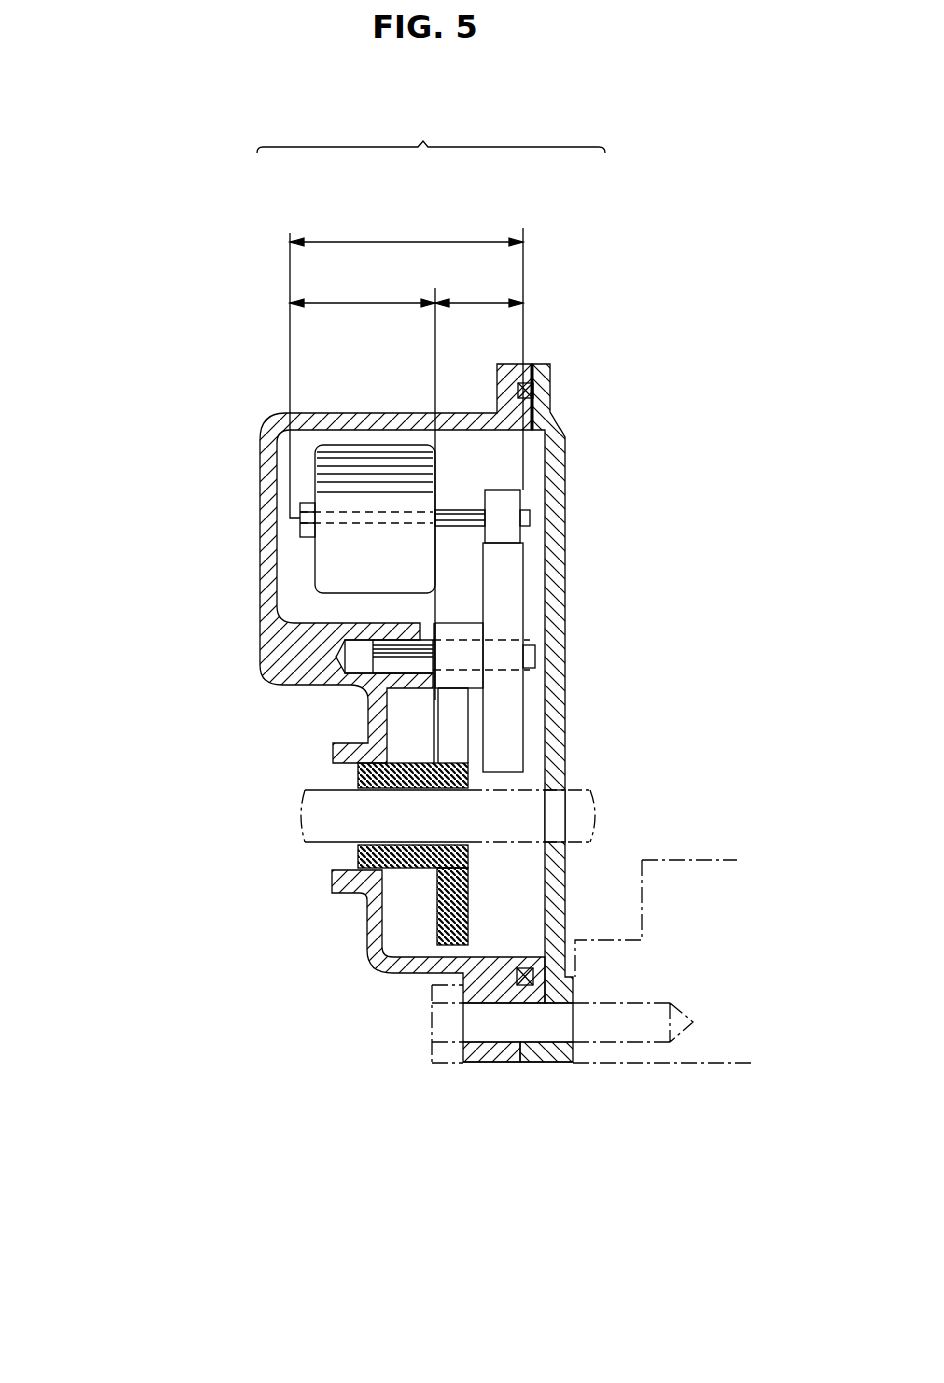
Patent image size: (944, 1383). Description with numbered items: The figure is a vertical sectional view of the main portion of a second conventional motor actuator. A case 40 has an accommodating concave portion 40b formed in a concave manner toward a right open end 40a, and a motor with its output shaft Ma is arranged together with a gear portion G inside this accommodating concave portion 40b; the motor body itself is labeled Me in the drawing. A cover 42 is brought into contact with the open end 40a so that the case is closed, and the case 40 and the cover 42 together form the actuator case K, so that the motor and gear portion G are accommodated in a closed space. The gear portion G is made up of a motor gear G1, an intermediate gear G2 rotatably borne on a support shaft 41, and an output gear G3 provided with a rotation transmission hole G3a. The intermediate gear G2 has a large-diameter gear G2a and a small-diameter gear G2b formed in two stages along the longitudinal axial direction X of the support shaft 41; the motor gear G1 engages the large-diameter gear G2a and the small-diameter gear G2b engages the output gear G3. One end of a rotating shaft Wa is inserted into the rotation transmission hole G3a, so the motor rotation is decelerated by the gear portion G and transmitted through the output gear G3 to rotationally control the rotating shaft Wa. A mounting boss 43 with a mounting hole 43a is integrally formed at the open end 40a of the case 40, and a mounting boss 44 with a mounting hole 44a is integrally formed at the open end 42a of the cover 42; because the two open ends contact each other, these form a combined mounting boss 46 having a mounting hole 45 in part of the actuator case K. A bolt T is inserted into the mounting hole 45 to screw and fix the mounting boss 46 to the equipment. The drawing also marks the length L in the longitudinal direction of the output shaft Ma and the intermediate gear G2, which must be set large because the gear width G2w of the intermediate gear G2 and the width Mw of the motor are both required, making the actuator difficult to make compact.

The actuator case K is at (431, 127).
The case 40 is at (272, 410).
The right open end 40a is at (515, 394).
The accommodating concave portion 40b is at (283, 575).
The cover 42 is at (565, 433).
The open end of the cover 42a is at (552, 378).
The length L is at (406, 363).
The width of the motor Mw is at (362, 486).
The gear width of the intermediate gear G2w is at (479, 289).
The electric motor Me is at (430, 546).
The output shaft Ma is at (464, 512).
The motor gear G1 is at (501, 490).
The gear portion G is at (597, 661).
The intermediate gear G2 is at (597, 661).
The large-diameter gear G2a is at (510, 710).
The small-diameter gear G2b is at (458, 635).
The support shaft 41 is at (402, 665).
The longitudinal axial direction X is at (412, 654).
The rotating shaft Wa is at (311, 820).
The output gear G3 is at (437, 898).
The rotation transmission hole G3a is at (365, 834).
The bolt T is at (430, 1040).
The mounting boss 43 is at (498, 1063).
The mounting boss 44 is at (547, 1063).
The mounting boss 46 is at (518, 1140).
The mounting hole 43a is at (480, 1063).
The mounting hole 44a is at (560, 1063).
The mounting hole 45 is at (521, 1196).